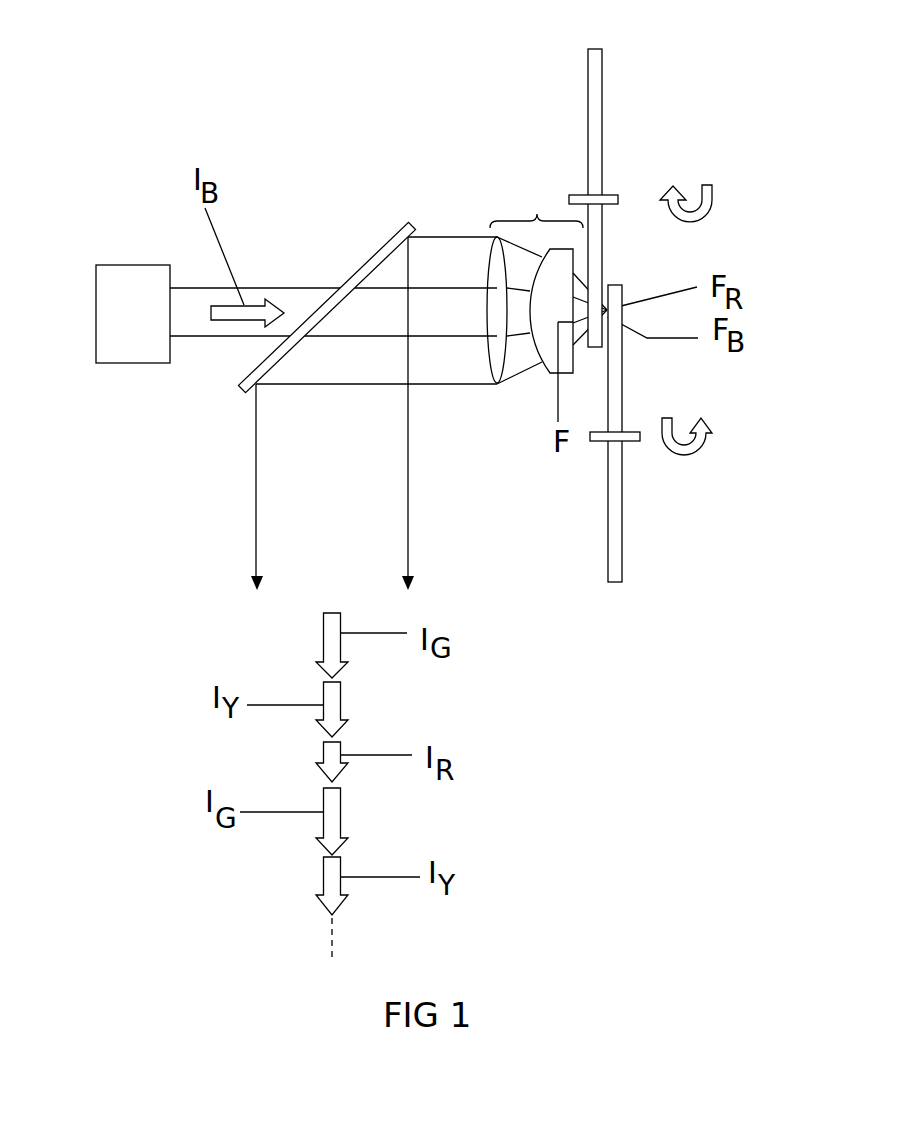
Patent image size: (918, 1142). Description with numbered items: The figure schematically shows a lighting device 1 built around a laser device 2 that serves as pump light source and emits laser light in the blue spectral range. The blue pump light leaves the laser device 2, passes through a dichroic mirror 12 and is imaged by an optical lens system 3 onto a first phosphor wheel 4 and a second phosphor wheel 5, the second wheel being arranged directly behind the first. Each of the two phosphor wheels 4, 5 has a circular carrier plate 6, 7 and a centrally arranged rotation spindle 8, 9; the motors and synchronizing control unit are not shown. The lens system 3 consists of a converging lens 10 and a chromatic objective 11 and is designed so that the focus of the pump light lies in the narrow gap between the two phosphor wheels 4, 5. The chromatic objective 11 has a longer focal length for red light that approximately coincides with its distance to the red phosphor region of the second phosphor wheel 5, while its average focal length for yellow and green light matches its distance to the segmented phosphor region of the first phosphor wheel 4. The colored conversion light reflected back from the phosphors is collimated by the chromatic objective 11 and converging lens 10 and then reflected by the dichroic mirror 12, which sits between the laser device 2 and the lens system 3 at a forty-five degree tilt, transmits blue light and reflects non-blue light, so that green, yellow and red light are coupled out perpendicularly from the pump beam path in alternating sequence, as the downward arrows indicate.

The lighting device 1 is at (221, 77).
The laser device 2 is at (130, 265).
The optical lens system 3 is at (608, 340).
The first phosphor wheel 4 is at (599, 198).
The second phosphor wheel 5 is at (632, 442).
The circular carrier plate 6 is at (598, 136).
The circular carrier plate 7 is at (607, 533).
The rotation spindle 8 is at (578, 195).
The rotation spindle 9 is at (633, 437).
The converging lens 10 is at (497, 360).
The chromatic objective 11 is at (562, 270).
The dichroic mirror 12 is at (375, 250).